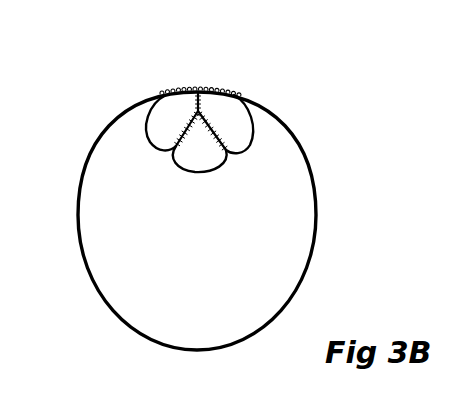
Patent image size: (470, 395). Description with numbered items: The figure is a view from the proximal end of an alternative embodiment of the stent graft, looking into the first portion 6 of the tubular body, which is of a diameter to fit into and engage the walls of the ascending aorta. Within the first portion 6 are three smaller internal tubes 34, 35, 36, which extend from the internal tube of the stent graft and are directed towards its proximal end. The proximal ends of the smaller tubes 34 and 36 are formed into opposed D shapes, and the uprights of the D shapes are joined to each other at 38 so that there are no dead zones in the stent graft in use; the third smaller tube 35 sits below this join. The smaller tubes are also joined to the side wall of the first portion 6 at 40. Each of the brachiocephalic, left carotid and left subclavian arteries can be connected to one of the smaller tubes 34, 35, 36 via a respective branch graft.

The first portion 6 is at (78, 211).
The smaller internal tube 34 is at (250, 118).
The smaller internal tube 35 is at (223, 165).
The smaller internal tube 36 is at (146, 113).
The join between the smaller tubes 38 is at (196, 110).
The join to side wall of first portion 40 is at (175, 89).